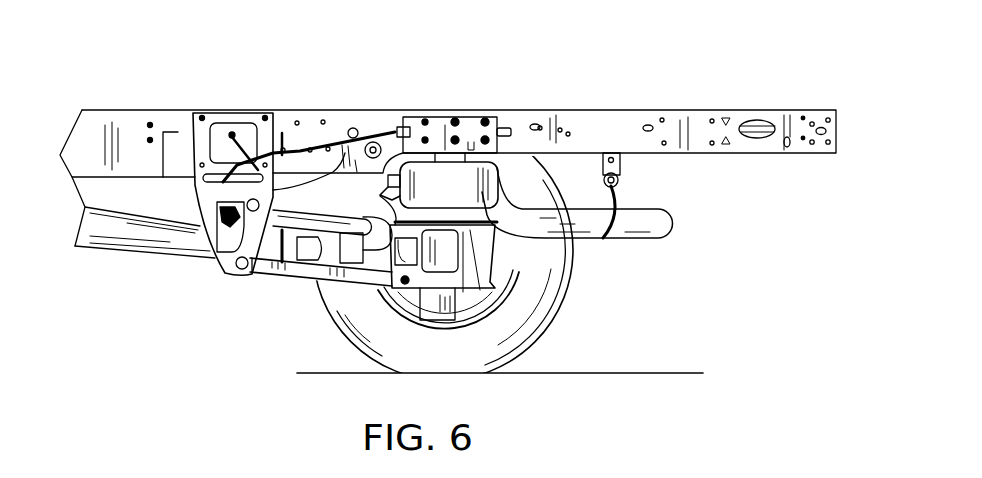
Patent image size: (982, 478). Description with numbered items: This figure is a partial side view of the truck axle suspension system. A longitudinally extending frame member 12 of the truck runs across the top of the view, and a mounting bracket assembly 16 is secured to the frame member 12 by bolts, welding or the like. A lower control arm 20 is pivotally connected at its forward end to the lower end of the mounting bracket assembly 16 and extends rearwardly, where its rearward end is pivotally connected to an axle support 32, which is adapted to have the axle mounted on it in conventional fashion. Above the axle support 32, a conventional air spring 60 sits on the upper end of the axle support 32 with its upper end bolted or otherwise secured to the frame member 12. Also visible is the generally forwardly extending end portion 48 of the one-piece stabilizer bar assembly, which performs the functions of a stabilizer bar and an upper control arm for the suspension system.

The frame member 12 is at (147, 118).
The mounting bracket assembly 16 is at (213, 260).
The lower control arm 20 is at (303, 272).
The axle support 32 is at (481, 272).
The end portion 48 is at (343, 183).
The air spring 60 is at (483, 190).